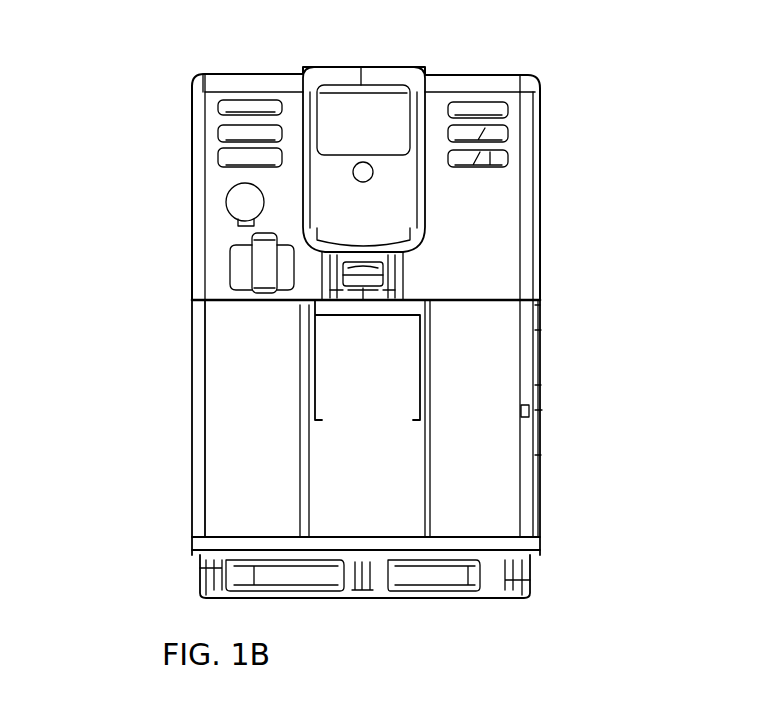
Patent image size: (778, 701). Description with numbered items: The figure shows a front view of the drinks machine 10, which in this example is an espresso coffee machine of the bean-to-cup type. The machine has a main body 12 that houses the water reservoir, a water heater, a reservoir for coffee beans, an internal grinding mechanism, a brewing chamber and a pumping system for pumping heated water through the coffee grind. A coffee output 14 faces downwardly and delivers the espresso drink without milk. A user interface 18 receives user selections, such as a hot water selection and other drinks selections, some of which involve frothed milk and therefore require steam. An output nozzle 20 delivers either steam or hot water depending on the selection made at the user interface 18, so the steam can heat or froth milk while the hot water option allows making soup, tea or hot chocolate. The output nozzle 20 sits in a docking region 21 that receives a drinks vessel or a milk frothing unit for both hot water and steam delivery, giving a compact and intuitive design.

The drinks machine 10 is at (562, 306).
The main body 12 is at (190, 256).
The coffee output 14 is at (396, 304).
The user interface 18 is at (550, 148).
The output nozzle 20 is at (256, 282).
The docking region 21 is at (263, 415).